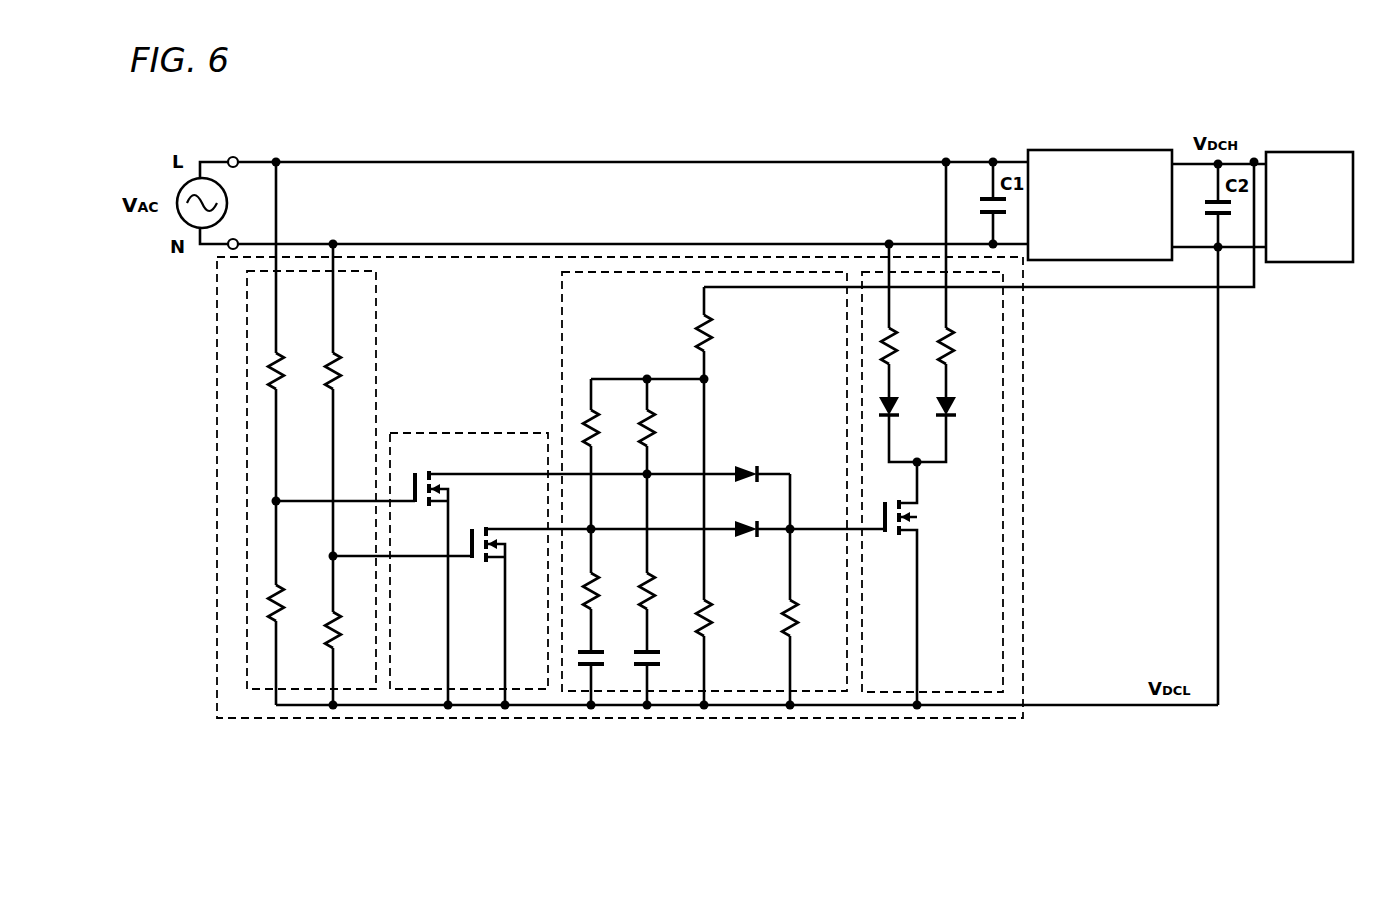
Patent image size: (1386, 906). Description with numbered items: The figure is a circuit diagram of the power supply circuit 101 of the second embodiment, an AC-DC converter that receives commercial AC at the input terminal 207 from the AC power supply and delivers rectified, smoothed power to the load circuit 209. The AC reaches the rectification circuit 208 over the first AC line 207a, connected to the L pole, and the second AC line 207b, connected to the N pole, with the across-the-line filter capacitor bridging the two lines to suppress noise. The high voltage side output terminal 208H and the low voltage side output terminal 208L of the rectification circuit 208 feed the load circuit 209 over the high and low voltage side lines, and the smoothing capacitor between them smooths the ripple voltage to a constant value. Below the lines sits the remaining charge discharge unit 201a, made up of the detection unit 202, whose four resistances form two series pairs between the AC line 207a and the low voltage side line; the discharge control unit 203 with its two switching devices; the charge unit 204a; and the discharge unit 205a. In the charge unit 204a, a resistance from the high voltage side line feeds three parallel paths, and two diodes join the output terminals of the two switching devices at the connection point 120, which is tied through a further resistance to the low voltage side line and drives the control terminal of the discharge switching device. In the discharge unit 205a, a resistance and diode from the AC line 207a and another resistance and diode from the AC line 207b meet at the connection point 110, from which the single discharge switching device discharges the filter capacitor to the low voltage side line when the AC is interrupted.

The power supply circuit 101 is at (173, 120).
The input terminal 207 is at (249, 134).
The AC line 207a is at (478, 162).
The AC line 207b is at (528, 244).
The rectification circuit 208 is at (1100, 150).
The high voltage side output terminal 208H is at (1180, 164).
The low voltage side output terminal 208L is at (1188, 248).
The load circuit 209 is at (1312, 152).
The remaining charge discharge unit 201a is at (260, 718).
The detection unit 202 is at (357, 692).
The discharge control unit 203 is at (530, 692).
The charge unit 204a is at (815, 692).
The discharge unit 205a is at (957, 692).
The connection point 120 is at (792, 526).
The connection point 110 is at (922, 465).